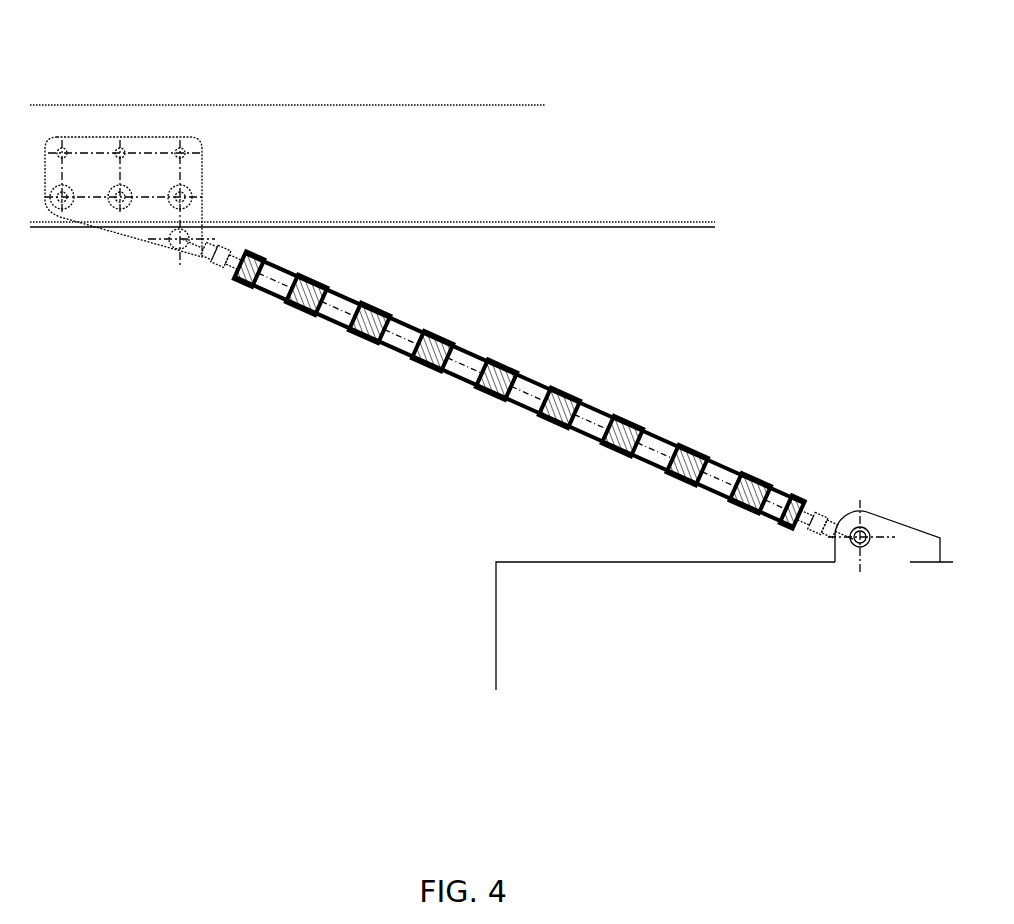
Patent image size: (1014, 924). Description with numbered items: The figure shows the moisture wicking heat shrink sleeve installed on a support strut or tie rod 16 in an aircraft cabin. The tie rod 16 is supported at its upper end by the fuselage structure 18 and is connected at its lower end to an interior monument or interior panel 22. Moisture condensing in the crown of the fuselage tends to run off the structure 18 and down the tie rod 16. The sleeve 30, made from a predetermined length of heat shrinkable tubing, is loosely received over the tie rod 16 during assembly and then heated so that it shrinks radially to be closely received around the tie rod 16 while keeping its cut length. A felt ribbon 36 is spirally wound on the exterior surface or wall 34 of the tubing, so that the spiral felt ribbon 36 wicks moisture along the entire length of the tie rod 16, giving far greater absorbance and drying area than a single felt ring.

The tie rod 16 is at (226, 271).
The fuselage structure 18 is at (318, 165).
The interior monument or interior panel 22 is at (600, 563).
The sleeve 30 is at (543, 334).
The exterior surface or wall 34 is at (402, 322).
The felt ribbon 36 is at (366, 302).